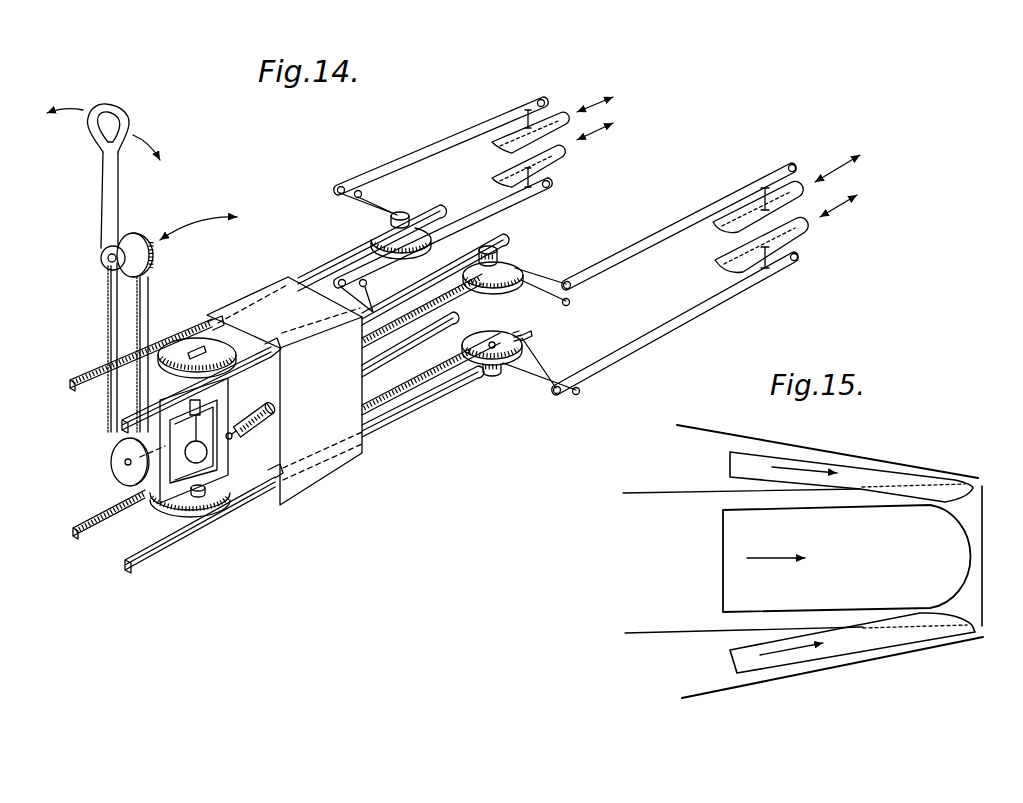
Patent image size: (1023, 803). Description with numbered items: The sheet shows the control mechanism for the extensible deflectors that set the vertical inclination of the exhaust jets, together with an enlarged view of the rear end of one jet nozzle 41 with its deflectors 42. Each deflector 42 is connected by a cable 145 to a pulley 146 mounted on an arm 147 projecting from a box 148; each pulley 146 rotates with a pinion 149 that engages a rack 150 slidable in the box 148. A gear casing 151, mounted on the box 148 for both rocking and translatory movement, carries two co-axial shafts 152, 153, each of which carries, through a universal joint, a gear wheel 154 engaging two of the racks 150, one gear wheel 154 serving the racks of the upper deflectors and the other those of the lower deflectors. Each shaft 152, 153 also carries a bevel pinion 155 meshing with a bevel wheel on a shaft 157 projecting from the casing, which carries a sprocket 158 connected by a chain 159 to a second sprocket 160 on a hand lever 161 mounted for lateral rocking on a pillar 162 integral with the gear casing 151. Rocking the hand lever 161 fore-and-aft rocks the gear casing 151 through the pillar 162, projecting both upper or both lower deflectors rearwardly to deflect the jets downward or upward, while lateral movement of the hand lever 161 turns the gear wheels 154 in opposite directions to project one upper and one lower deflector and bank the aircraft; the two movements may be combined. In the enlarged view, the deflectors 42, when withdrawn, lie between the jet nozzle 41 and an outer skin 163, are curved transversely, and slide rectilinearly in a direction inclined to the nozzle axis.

In FIG. 15, the jet nozzle 41 is at (981, 596).
In FIG. 14, the deflector 42 is at (563, 146).
In FIG. 15, the deflector 42 is at (955, 535).
In FIG. 14, the cable 145 is at (477, 212).
In FIG. 14, the pulley 146 is at (372, 230).
In FIG. 14, the arm 147 is at (508, 265).
In FIG. 14, the box 148 is at (268, 303).
In FIG. 14, the pinion 149 is at (403, 213).
In FIG. 14, the rack 150 is at (332, 258).
In FIG. 14, the gear casing 151 is at (153, 497).
In FIG. 14, the shaft 152 is at (178, 410).
In FIG. 14, the shaft 153 is at (201, 492).
In FIG. 14, the gear wheel 154 is at (176, 332).
In FIG. 14, the bevel pinion 155 is at (205, 452).
In FIG. 14, the shaft 157 is at (121, 484).
In FIG. 14, the sprocket 158 is at (122, 458).
In FIG. 14, the chain 159 is at (108, 320).
In FIG. 14, the second sprocket 160 is at (128, 235).
In FIG. 14, the hand lever 161 is at (107, 187).
In FIG. 14, the pillar 162 is at (151, 288).
In FIG. 15, the outer skin 163 is at (937, 455).